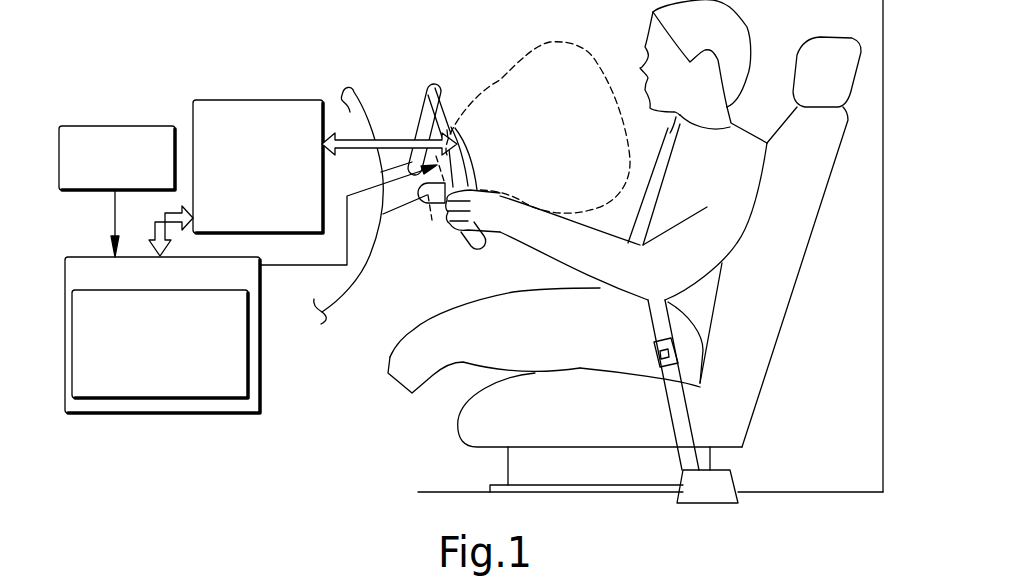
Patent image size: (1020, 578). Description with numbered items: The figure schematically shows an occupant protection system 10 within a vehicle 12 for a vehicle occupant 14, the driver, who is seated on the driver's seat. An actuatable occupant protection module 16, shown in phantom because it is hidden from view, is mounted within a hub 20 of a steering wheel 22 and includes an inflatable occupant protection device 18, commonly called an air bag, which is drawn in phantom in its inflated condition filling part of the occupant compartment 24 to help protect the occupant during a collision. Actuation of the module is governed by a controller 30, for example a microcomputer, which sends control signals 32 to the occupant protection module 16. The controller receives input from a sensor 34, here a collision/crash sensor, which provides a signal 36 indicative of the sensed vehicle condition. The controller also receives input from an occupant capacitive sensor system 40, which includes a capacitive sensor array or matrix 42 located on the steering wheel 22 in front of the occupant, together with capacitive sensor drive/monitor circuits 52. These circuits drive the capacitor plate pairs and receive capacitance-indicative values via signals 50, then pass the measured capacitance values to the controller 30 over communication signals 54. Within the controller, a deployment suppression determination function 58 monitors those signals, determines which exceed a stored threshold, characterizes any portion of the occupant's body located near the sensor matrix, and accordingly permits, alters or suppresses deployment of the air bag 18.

The occupant protection system 10 is at (150, 55).
The vehicle 12 is at (878, 30).
The vehicle occupant 14 is at (756, 170).
The actuatable occupant protection module 16 is at (432, 210).
The inflatable occupant protection device 18 is at (538, 47).
The hub 20 is at (466, 167).
The steering wheel 22 is at (444, 82).
The occupant compartment 24 is at (625, 49).
The controller 30 is at (181, 320).
The control signals 32 is at (280, 265).
The sensor 34 is at (112, 127).
The signal 36 is at (113, 208).
The occupant capacitive sensor system 40 is at (258, 128).
The capacitive sensor array or matrix 42 is at (482, 145).
The signals 50 is at (412, 125).
The capacitive sensor drive/monitor circuits 52 is at (247, 103).
The communication signals 54 is at (155, 232).
The deployment suppression determination function 58 is at (235, 382).